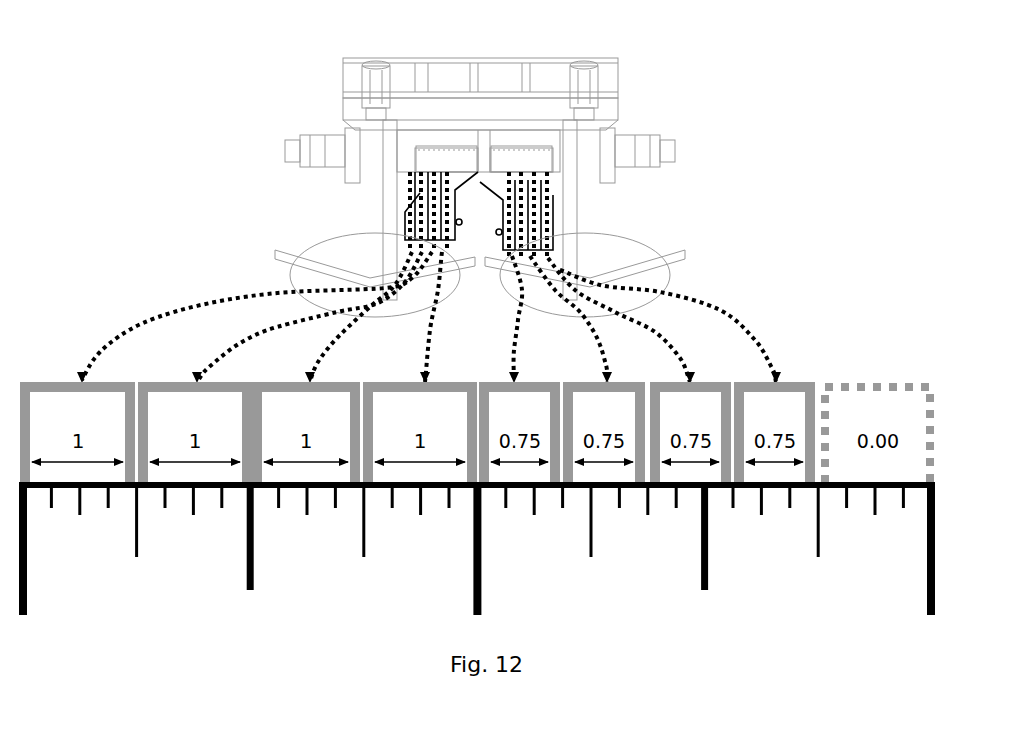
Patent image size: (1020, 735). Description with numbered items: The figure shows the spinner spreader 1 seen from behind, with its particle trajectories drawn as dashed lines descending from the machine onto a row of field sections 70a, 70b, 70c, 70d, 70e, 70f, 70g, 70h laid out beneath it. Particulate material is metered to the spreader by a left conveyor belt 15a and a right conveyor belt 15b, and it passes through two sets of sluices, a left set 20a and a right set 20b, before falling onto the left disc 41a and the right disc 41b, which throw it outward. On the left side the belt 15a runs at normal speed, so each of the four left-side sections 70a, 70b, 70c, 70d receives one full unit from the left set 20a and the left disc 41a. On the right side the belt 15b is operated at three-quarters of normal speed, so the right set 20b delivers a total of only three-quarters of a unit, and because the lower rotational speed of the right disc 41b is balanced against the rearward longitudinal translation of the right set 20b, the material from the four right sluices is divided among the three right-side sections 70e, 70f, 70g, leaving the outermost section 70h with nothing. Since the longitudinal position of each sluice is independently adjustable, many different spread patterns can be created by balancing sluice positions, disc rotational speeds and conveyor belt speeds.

The spinner spreader 1 is at (704, 139).
The left conveyor belt 15a is at (451, 156).
The right conveyor belt 15b is at (497, 156).
The left set of sluices 20a is at (403, 210).
The right set of sluices 20b is at (553, 210).
The left disc 41a is at (335, 247).
The right disc 41b is at (625, 247).
The section 70a is at (67, 550).
The section 70b is at (180, 550).
The section 70c is at (294, 550).
The section 70d is at (408, 550).
The right-side section 70e is at (521, 550).
The right-side section 70f is at (635, 550).
The right-side section 70g is at (750, 550).
The section 70h is at (862, 550).